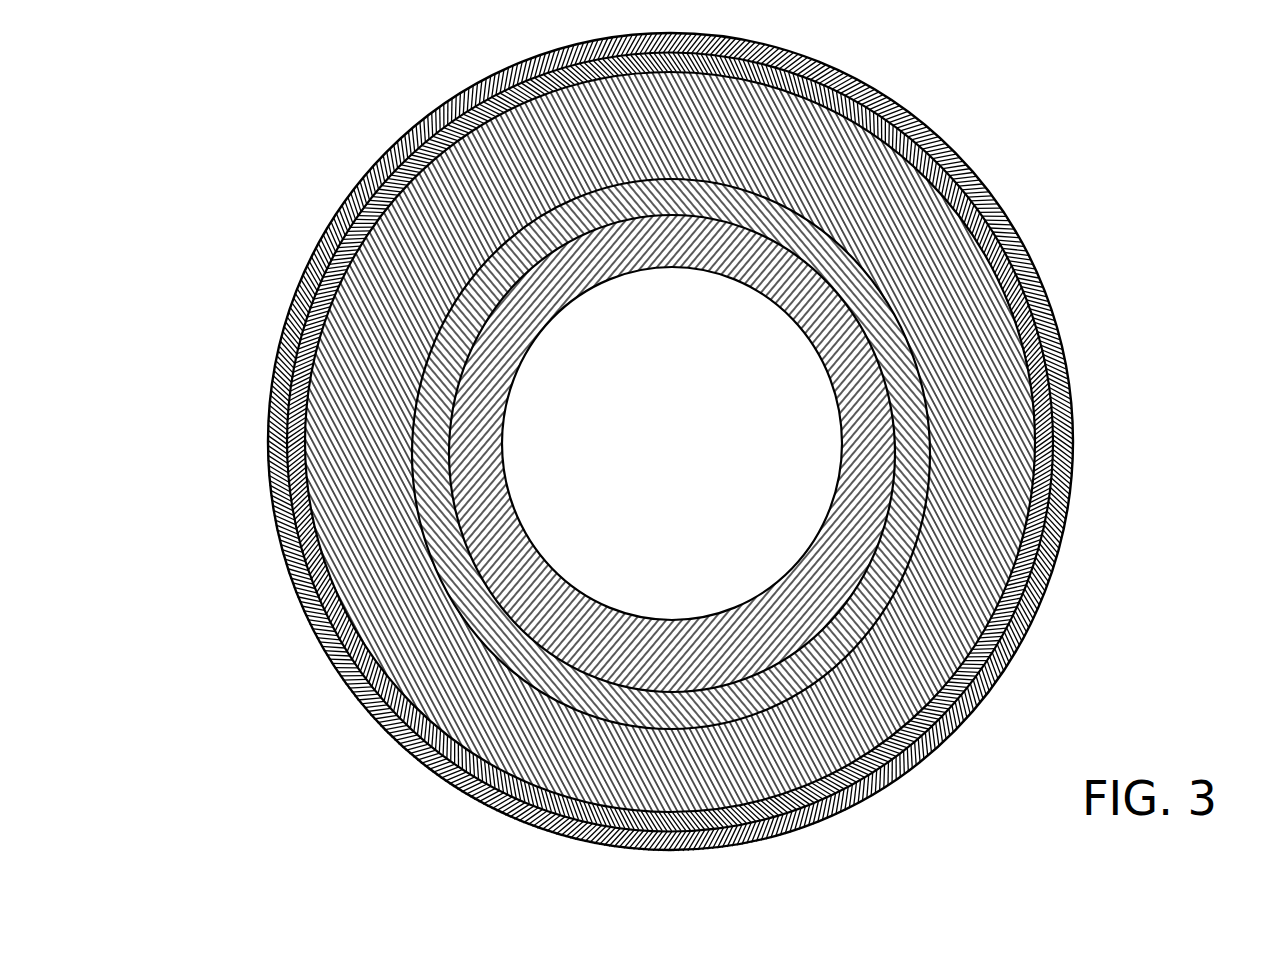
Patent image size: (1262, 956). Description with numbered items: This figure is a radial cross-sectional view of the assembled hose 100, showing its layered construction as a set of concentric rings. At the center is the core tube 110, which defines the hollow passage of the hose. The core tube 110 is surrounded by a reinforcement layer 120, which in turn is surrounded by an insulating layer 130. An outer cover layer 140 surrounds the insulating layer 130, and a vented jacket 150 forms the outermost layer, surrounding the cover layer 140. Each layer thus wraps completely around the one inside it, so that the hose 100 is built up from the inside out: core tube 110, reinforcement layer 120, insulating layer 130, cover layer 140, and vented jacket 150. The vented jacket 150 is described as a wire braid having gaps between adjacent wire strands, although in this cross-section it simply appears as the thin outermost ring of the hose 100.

The hose 100 is at (689, 473).
The core tube 110 is at (860, 507).
The reinforcement layer 120 is at (865, 607).
The insulating layer 130 is at (415, 625).
The cover layer 140 is at (333, 282).
The vented jacket 150 is at (392, 152).